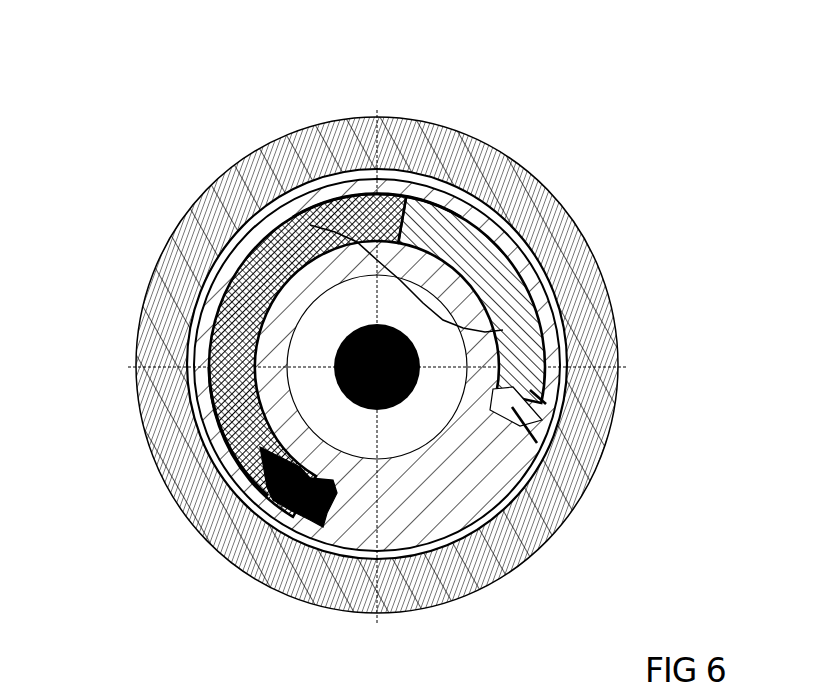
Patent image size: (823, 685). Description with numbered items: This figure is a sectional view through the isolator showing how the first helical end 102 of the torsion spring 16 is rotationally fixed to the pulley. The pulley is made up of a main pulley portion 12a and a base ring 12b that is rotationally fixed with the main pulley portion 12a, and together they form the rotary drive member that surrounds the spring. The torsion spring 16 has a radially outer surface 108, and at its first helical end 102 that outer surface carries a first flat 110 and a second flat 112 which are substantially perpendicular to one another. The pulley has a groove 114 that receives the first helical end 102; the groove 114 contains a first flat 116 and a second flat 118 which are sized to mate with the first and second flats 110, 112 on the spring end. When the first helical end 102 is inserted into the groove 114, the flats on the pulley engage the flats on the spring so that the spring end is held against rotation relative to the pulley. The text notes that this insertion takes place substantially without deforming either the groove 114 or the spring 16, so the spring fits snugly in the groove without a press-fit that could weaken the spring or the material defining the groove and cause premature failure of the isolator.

The main pulley portion 12a is at (512, 188).
The base ring 12b is at (490, 493).
The torsion spring 16 is at (283, 500).
The first helical end 102 is at (537, 397).
The radially outer surface 108 is at (396, 196).
The first flat 110 is at (328, 198).
The second flat 112 is at (253, 465).
The groove 114 is at (512, 407).
The first flat 116 is at (500, 330).
The second flat 118 is at (237, 363).